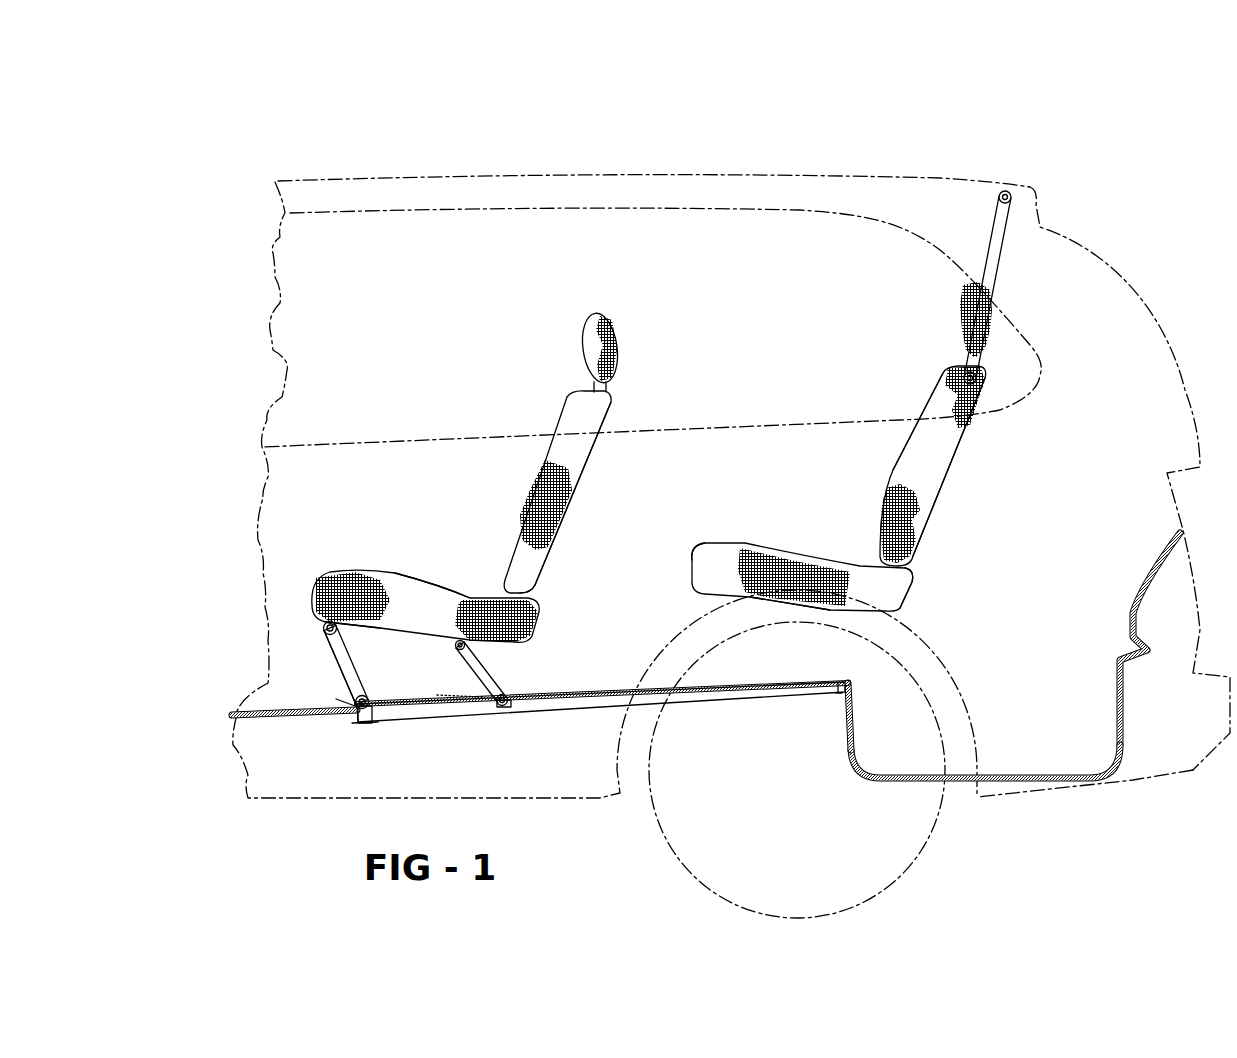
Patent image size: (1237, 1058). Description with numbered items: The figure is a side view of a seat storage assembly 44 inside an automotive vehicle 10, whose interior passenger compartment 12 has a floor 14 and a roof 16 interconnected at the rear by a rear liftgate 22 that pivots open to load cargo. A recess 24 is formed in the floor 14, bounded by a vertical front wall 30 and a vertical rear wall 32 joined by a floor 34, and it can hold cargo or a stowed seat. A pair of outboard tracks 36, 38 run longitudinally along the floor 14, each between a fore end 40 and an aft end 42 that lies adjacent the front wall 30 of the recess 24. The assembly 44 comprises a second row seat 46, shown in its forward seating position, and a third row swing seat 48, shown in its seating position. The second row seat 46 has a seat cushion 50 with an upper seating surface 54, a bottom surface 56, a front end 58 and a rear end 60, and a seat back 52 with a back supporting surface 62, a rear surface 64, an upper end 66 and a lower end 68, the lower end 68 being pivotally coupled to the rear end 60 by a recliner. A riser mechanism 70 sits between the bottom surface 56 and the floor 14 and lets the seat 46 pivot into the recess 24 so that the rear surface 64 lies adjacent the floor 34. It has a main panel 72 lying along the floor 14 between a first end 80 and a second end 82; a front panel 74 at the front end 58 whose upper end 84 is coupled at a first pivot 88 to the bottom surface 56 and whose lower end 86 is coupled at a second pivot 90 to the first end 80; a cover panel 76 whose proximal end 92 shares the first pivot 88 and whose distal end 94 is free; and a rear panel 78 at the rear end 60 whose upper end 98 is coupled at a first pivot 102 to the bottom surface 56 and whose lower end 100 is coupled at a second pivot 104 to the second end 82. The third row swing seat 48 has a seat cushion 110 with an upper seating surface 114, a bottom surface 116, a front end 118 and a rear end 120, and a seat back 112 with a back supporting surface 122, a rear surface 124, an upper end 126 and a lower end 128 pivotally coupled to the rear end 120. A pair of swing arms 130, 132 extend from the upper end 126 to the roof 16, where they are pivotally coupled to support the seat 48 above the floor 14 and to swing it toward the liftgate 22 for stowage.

The automotive vehicle 10 is at (272, 120).
The interior passenger compartment 12 is at (320, 218).
The floor 14 is at (238, 710).
The roof 16 is at (690, 212).
The rear liftgate 22 is at (1155, 350).
The recess 24 is at (1120, 785).
The front wall 30 is at (862, 728).
The rear wall 32 is at (1115, 715).
The floor 34 is at (1000, 775).
The outboard track 36 is at (602, 666).
The outboard track 38 is at (605, 692).
The fore end 40 is at (358, 724).
The aft end 42 is at (836, 690).
The seat storage assembly 44 is at (748, 382).
The second row seat 46 is at (524, 480).
The third row swing seat 48 is at (888, 468).
The seat cushion 50 is at (425, 595).
The seat back 52 is at (565, 455).
The upper seating surface 54 is at (442, 582).
The bottom surface 56 is at (400, 633).
The front end 58 is at (320, 600).
The rear end 60 is at (540, 630).
The back supporting surface 62 is at (520, 505).
The rear surface 64 is at (575, 492).
The upper end 66 is at (610, 393).
The lower end 68 is at (540, 590).
The riser mechanism 70 is at (250, 646).
The main panel 72 is at (425, 705).
The front panel 74 is at (350, 667).
The cover panel 76 is at (335, 672).
The rear panel 78 is at (502, 680).
The first end 80 is at (372, 724).
The second end 82 is at (490, 704).
The upper end 84 is at (345, 638).
The lower end 86 is at (360, 685).
The first pivot 88 is at (325, 625).
The second pivot 90 is at (352, 712).
The proximal end 92 is at (322, 629).
The distal end 94 is at (330, 710).
The upper end 98 is at (525, 640).
The lower end 100 is at (512, 692).
The first pivot 102 is at (456, 646).
The second pivot 104 is at (506, 707).
The seat cushion 110 is at (795, 565).
The seat back 112 is at (915, 460).
The upper seating surface 114 is at (814, 565).
The bottom surface 116 is at (790, 608).
The front end 118 is at (690, 565).
The rear end 120 is at (908, 594).
The back supporting surface 122 is at (920, 435).
The rear surface 124 is at (942, 481).
The upper end 126 is at (958, 378).
The lower end 128 is at (912, 556).
The swing arm 130 is at (1024, 287).
The swing arm 132 is at (990, 300).